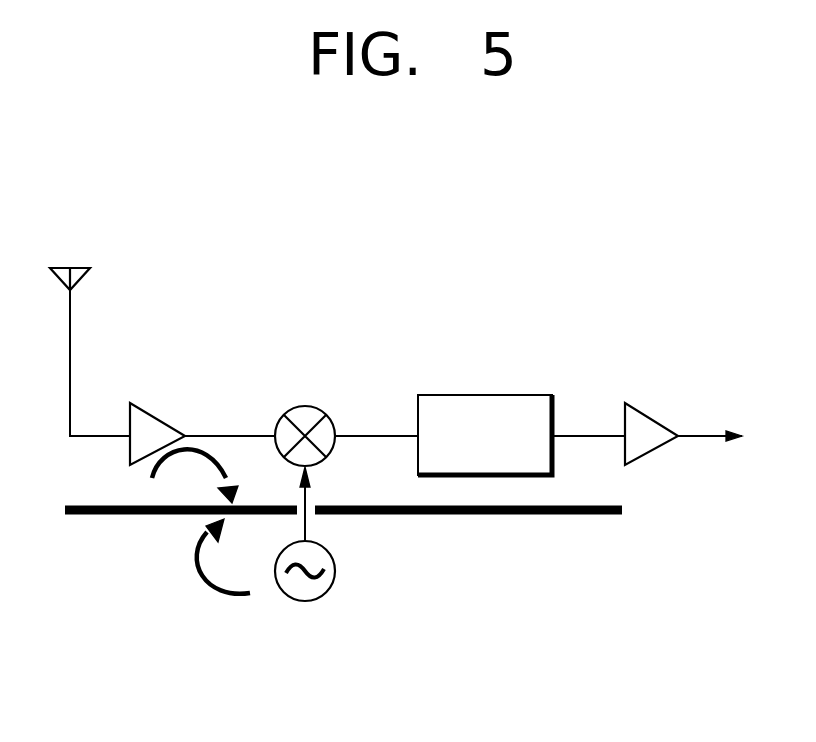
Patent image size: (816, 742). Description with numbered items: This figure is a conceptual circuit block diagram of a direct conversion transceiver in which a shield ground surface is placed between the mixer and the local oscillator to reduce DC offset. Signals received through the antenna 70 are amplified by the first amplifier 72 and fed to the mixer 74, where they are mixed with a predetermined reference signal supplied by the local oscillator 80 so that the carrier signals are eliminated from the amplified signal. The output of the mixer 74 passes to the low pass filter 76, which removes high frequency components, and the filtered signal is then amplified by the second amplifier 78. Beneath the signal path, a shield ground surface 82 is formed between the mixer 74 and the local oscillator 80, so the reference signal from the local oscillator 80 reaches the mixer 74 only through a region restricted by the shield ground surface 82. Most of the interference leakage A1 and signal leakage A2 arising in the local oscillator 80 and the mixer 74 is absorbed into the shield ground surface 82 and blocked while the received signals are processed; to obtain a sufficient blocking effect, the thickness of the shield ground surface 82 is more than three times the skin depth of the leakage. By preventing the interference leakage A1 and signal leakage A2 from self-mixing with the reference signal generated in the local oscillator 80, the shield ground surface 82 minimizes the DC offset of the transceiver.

The antenna 70 is at (77, 265).
The first amplifier 72 is at (163, 418).
The mixer 74 is at (305, 406).
The low pass filter 76 is at (513, 396).
The second amplifier 78 is at (656, 415).
The local oscillator 80 is at (335, 571).
The shield ground surface 82 is at (622, 510).
The interference leakage A1 is at (213, 450).
The signal leakage A2 is at (200, 582).